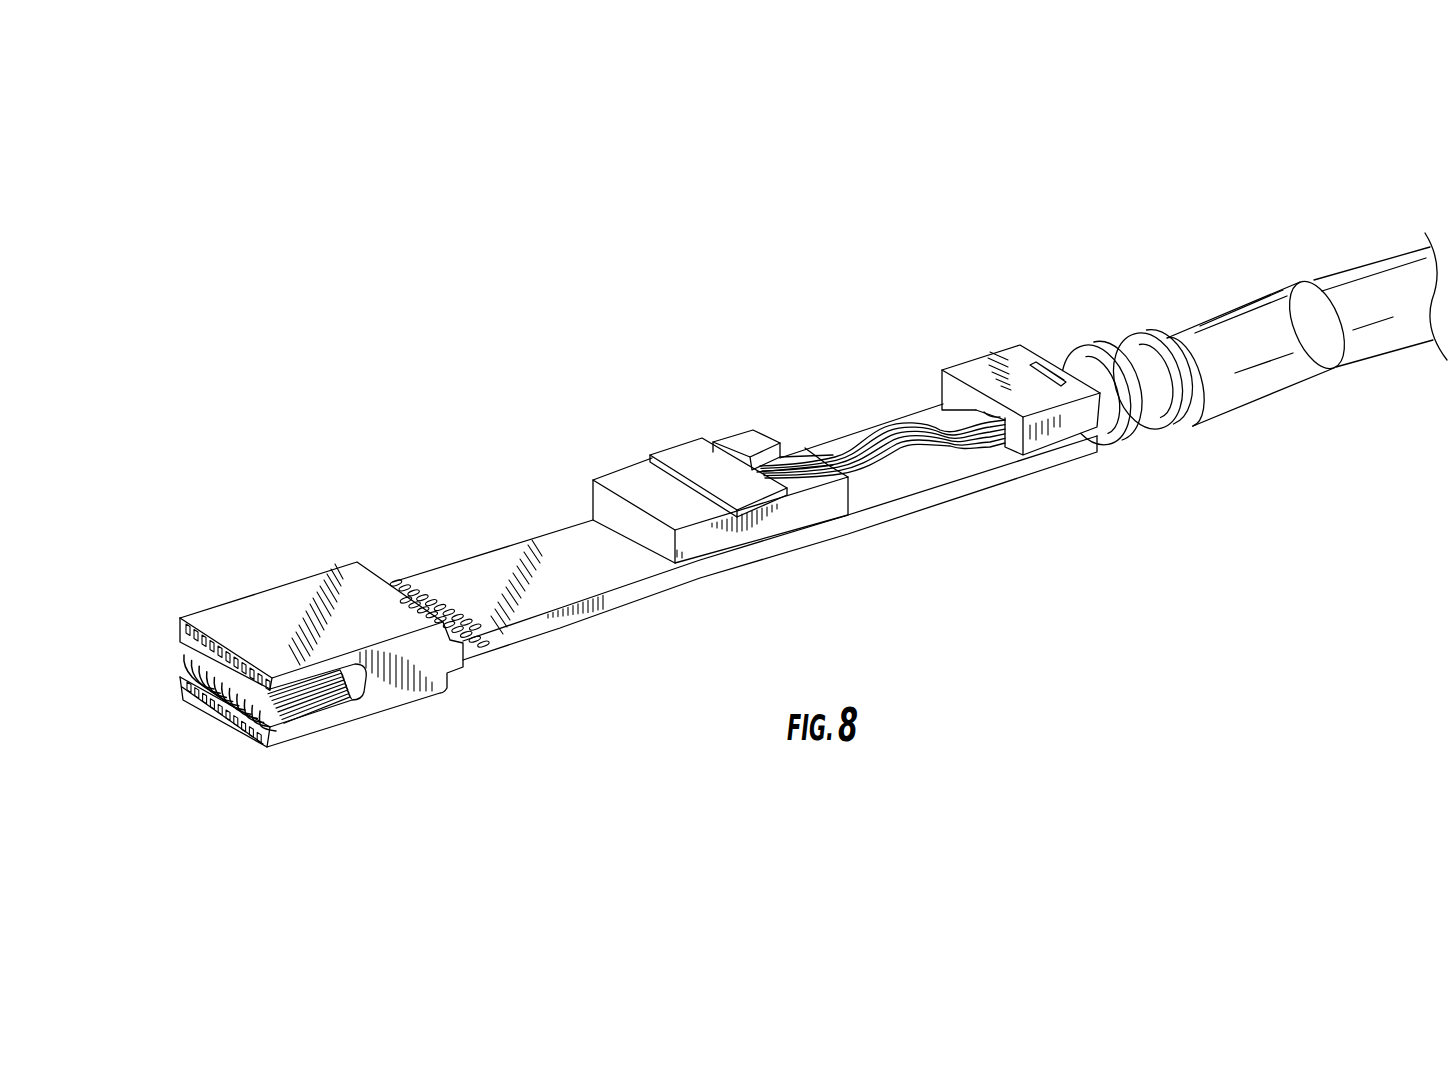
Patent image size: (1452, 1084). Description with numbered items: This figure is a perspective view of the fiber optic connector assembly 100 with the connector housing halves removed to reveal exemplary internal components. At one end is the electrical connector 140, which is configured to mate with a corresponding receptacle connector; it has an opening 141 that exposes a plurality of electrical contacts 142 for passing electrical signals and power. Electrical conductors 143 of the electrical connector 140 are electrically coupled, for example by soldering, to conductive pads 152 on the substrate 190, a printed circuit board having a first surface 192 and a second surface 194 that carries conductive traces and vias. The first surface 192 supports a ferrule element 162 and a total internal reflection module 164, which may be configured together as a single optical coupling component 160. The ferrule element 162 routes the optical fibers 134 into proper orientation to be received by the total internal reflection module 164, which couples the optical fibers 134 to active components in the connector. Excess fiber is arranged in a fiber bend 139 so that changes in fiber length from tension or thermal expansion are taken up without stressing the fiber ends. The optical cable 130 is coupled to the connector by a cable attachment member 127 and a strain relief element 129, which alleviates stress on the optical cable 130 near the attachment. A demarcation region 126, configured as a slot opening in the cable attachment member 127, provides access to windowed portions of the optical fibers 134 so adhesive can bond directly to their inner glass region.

The cable assembly 100 is at (601, 404).
The demarcation region 126 is at (1047, 375).
The cable attachment member 127 is at (978, 365).
The strain relief element 129 is at (1098, 340).
The optical cable 130 is at (1222, 290).
The optical fibers 134 is at (992, 455).
The fiber bend 139 is at (878, 408).
The electrical connector 140 is at (256, 545).
The opening 141 is at (183, 655).
The electrical contacts 142 is at (300, 722).
The electrical conductors 143 is at (484, 632).
The conductive pads 152 is at (470, 604).
The optical coupling component 160 is at (662, 418).
The ferrule element 162 is at (745, 440).
The total internal reflection module 164 is at (642, 485).
The substrate 190 is at (478, 562).
The first surface 192 is at (585, 532).
The second surface 194 is at (605, 617).